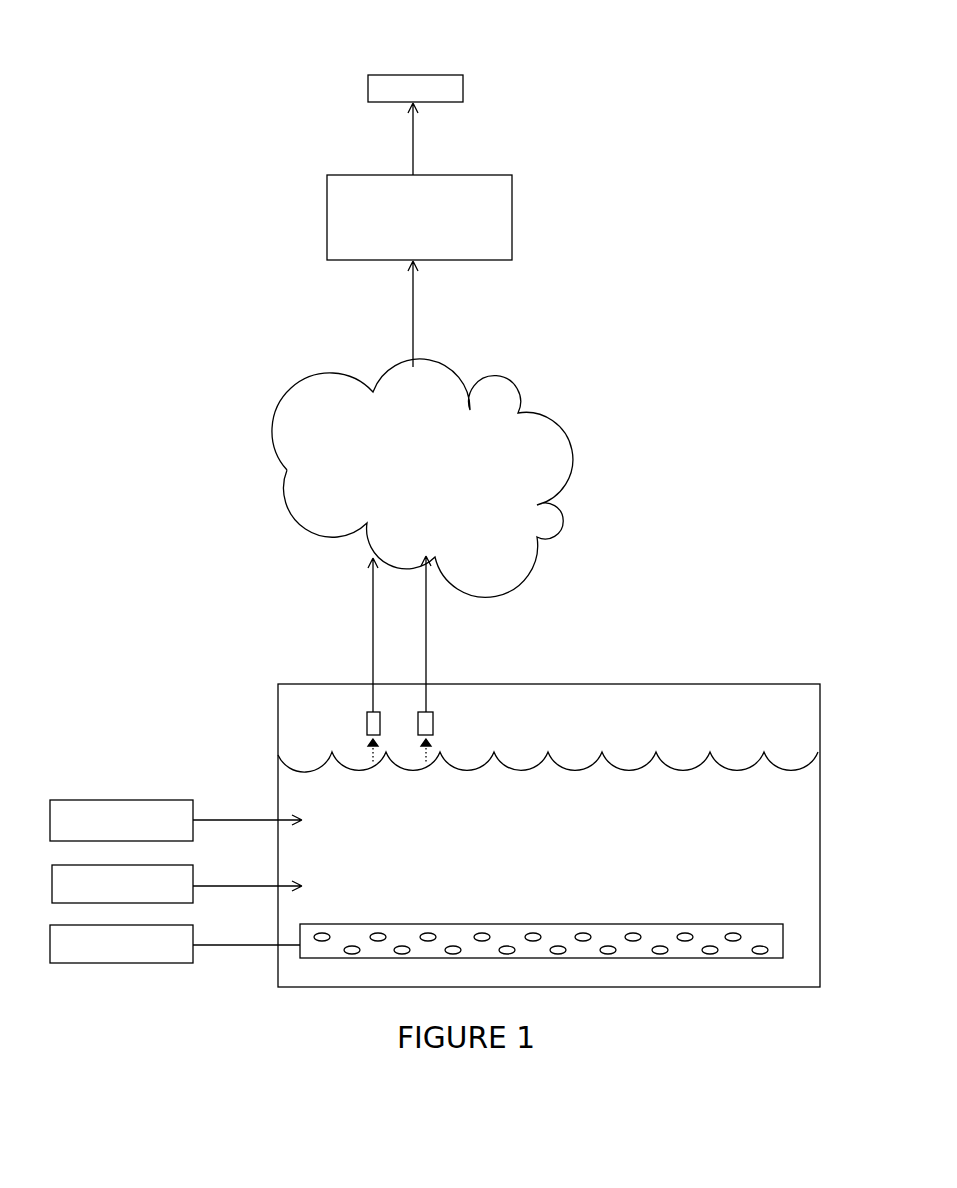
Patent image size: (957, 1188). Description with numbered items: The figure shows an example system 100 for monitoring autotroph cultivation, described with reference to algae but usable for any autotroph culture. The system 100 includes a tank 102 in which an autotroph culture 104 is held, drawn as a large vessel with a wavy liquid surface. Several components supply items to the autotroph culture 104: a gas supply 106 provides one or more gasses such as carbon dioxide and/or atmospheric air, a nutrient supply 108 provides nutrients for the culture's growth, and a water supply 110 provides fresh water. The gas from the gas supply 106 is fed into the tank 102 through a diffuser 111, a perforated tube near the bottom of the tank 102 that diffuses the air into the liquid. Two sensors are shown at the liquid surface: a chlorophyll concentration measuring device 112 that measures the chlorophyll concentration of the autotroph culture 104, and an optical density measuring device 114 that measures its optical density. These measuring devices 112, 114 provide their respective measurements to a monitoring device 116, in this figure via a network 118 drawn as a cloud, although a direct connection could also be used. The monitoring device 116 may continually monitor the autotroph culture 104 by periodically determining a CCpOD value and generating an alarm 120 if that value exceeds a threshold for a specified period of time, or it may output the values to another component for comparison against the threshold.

The system 100 is at (237, 67).
The tank 102 is at (820, 900).
The autotroph culture 104 is at (677, 880).
The gas supply 106 is at (193, 935).
The nutrient supply 108 is at (193, 876).
The water supply 110 is at (193, 812).
The diffuser 111 is at (435, 924).
The chlorophyll concentration measuring device 112 is at (367, 728).
The optical density measuring device 114 is at (433, 733).
The monitoring device 116 is at (462, 175).
The network 118 is at (518, 409).
The alarm 120 is at (414, 75).